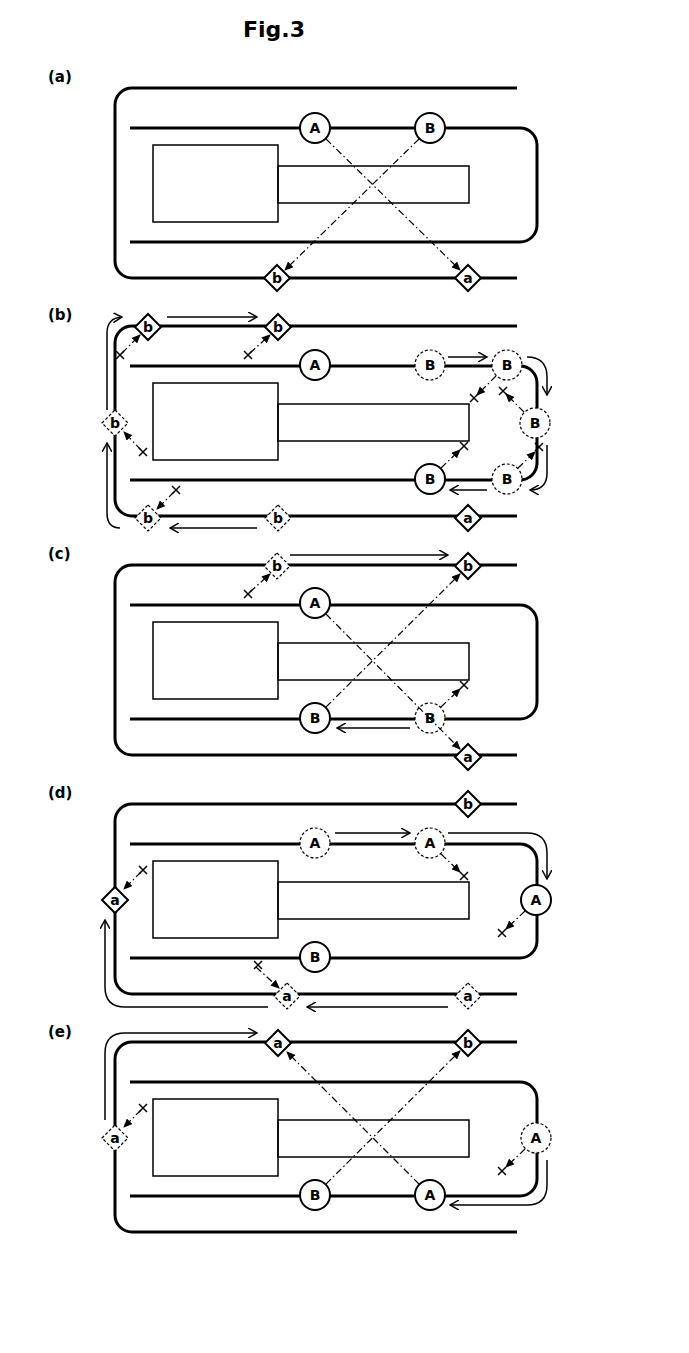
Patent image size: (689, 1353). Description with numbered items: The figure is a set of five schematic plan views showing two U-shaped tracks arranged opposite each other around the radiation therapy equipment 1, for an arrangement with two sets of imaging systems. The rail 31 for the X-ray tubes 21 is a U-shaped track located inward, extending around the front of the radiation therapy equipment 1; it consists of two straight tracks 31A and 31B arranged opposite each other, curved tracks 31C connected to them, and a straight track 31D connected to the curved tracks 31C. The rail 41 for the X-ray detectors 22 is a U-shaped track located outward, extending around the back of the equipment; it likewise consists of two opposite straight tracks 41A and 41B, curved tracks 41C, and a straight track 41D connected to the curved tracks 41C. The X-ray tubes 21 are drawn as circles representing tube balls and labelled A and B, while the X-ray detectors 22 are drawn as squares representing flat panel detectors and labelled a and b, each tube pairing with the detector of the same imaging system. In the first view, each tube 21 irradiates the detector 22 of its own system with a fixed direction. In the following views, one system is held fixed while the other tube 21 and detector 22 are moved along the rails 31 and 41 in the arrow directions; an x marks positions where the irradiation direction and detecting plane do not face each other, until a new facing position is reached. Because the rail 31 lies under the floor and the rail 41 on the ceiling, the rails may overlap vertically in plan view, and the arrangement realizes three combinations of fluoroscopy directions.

The radiation therapy equipment 1 is at (150, 212).
The X-ray tube 21 is at (306, 118).
The X-ray detector 22 is at (268, 272).
The rail for the X-ray tubes 31 is at (379, 184).
The straight track 31A is at (232, 127).
The straight track 31B is at (178, 243).
The curved tracks 31C is at (538, 136).
The straight track 31D is at (540, 202).
The rail for the X-ray detectors 41 is at (275, 183).
The straight track 41A is at (185, 89).
The straight track 41B is at (220, 278).
The curved tracks 41C is at (118, 92).
The straight track 41D is at (115, 200).